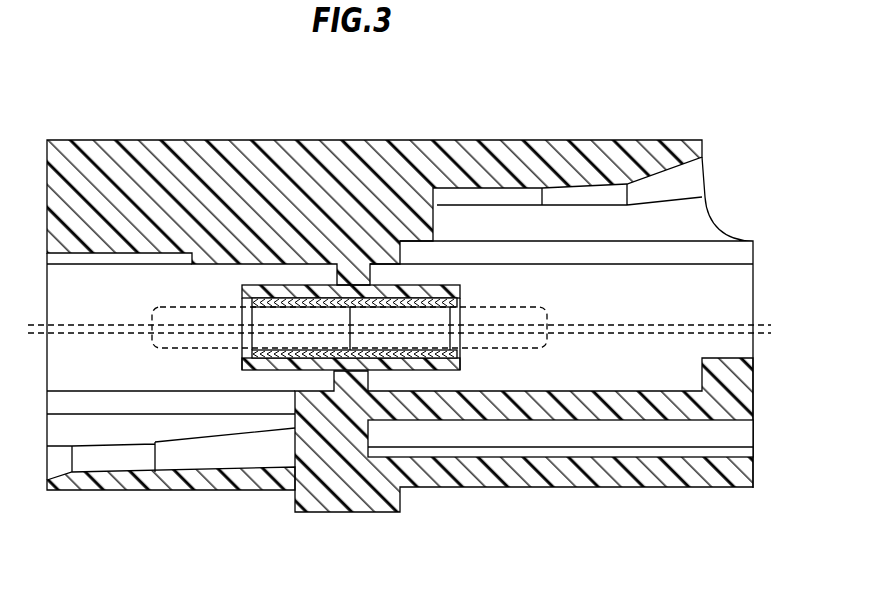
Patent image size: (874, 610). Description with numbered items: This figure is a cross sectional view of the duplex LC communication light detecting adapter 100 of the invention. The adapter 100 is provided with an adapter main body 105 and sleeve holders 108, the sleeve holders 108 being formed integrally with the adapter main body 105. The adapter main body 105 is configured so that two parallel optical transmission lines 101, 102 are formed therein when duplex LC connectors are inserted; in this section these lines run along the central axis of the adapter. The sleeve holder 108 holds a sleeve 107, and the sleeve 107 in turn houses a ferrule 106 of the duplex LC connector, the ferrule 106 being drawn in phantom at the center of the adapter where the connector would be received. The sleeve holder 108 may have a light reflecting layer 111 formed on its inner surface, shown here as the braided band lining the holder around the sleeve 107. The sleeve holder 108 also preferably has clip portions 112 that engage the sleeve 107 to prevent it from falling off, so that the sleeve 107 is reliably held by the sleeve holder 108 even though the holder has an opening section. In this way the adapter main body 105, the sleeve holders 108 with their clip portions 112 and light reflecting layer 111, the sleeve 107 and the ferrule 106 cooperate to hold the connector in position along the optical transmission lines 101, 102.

The duplex LC communication light detecting adapter 100 is at (682, 88).
The optical transmission line 101 is at (588, 333).
The optical transmission line 102 is at (670, 525).
The adapter main body 105 is at (528, 475).
The ferrule 106 is at (178, 348).
The sleeve 107 is at (282, 358).
The sleeve holder 108 is at (418, 364).
The light reflecting layer 111 is at (297, 300).
The clip portion 112 is at (432, 292).